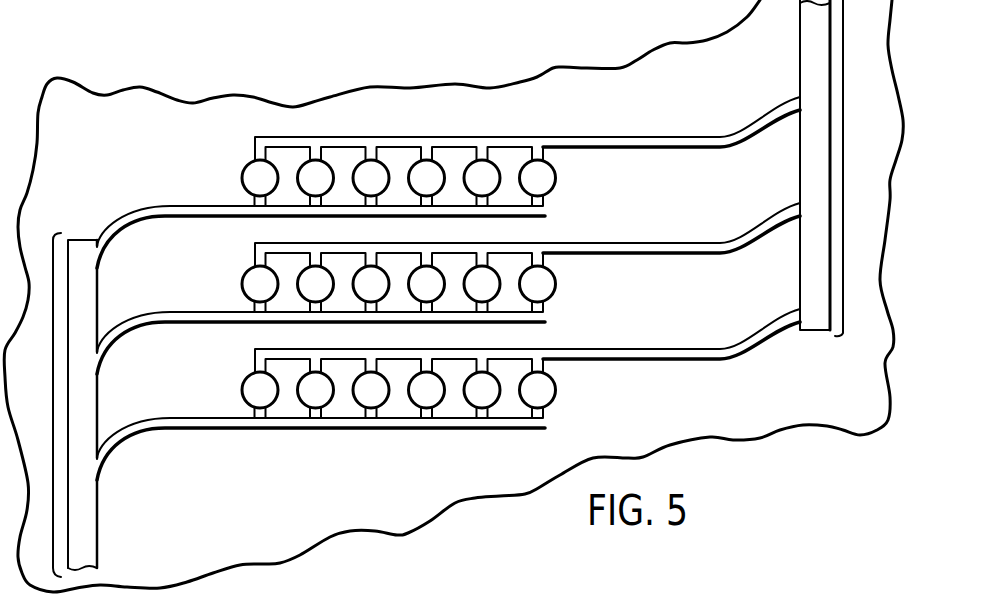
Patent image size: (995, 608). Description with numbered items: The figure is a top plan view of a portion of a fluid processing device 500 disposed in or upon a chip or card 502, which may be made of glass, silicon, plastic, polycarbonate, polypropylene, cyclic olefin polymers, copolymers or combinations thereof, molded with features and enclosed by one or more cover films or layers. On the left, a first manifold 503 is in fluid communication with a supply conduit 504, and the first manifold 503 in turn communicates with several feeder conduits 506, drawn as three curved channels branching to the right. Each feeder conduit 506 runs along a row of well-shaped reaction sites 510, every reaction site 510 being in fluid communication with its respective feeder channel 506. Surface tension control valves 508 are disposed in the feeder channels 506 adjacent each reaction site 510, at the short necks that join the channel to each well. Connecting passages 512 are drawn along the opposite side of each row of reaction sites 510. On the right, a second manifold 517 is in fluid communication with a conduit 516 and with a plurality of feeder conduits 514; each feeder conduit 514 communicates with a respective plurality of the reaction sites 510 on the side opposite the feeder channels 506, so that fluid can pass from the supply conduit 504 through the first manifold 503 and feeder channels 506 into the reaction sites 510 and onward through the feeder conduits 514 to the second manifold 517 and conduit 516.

The fluid processing device 500 is at (333, 85).
The chip or card 502 is at (563, 65).
The first manifold 503 is at (53, 398).
The supply conduit 504 is at (87, 543).
The feeder conduit 506 is at (137, 228).
The surface tension control valve 508 is at (548, 309).
The reaction site 510 is at (440, 168).
The connecting channel 512 is at (255, 153).
The feeder conduit 514 is at (705, 136).
The conduit 516 is at (810, 63).
The second manifold 517 is at (843, 158).